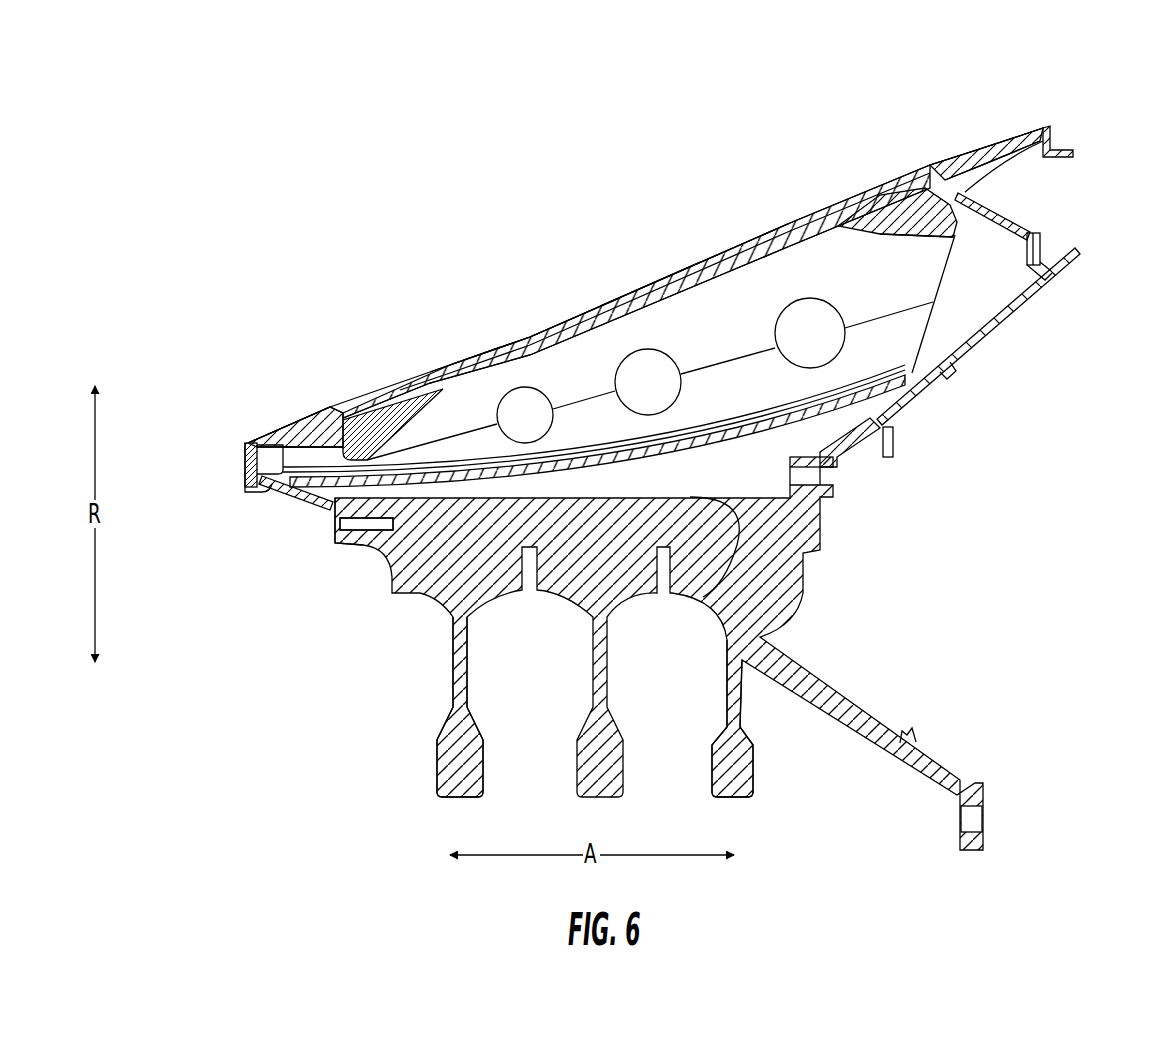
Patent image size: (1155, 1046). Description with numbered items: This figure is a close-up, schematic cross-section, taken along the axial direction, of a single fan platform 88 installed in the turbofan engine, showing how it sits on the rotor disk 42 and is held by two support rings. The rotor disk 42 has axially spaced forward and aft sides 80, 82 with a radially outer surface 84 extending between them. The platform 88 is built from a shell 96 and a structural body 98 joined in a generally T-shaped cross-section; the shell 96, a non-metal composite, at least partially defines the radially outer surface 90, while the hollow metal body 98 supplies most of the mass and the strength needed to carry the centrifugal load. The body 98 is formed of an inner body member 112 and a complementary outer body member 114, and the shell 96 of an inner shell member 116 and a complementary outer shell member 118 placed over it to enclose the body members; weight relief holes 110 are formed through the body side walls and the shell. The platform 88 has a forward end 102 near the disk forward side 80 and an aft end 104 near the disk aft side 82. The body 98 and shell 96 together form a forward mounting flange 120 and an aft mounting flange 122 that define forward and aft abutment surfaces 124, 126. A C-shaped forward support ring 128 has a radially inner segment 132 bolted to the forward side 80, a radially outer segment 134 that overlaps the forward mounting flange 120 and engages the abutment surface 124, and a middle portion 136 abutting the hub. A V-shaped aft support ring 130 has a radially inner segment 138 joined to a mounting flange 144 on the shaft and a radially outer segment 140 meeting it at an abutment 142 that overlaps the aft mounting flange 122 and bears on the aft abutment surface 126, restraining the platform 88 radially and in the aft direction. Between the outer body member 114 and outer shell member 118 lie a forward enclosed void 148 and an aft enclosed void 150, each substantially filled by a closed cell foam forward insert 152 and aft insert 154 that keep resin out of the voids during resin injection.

The rotor disk 42 is at (423, 595).
The forward side 80 is at (338, 542).
The aft side 82 is at (821, 522).
The radially outer surface 84 is at (710, 603).
The fan platform 88 is at (493, 242).
The radially outer surface 90 is at (690, 260).
The shell 96 is at (460, 372).
The structural body 98 is at (738, 320).
The forward end 102 is at (216, 390).
The aft end 104 is at (913, 140).
The weight relief holes 110 is at (615, 386).
The inner body member 112 is at (763, 420).
The outer body member 114 is at (637, 323).
The inner shell member 116 is at (740, 452).
The outer shell member 118 is at (567, 320).
The forward mounting flange 120 is at (287, 476).
The aft mounting flange 122 is at (930, 167).
The forward abutment surface 124 is at (306, 408).
The aft abutment surface 126 is at (958, 192).
The forward support ring 128 is at (241, 460).
The aft support ring 130 is at (1046, 122).
The radially inner segment 132 is at (290, 490).
The radially outer segment 134 is at (268, 437).
The middle portion 136 is at (250, 470).
The radially inner segment 138 is at (1020, 235).
The radially outer segment 140 is at (1010, 143).
The abutment 142 is at (970, 203).
The mounting flange 144 is at (1062, 265).
The forward enclosed void 148 is at (352, 420).
The aft enclosed void 150 is at (863, 215).
The forward insert 152 is at (414, 380).
The aft insert 154 is at (890, 203).